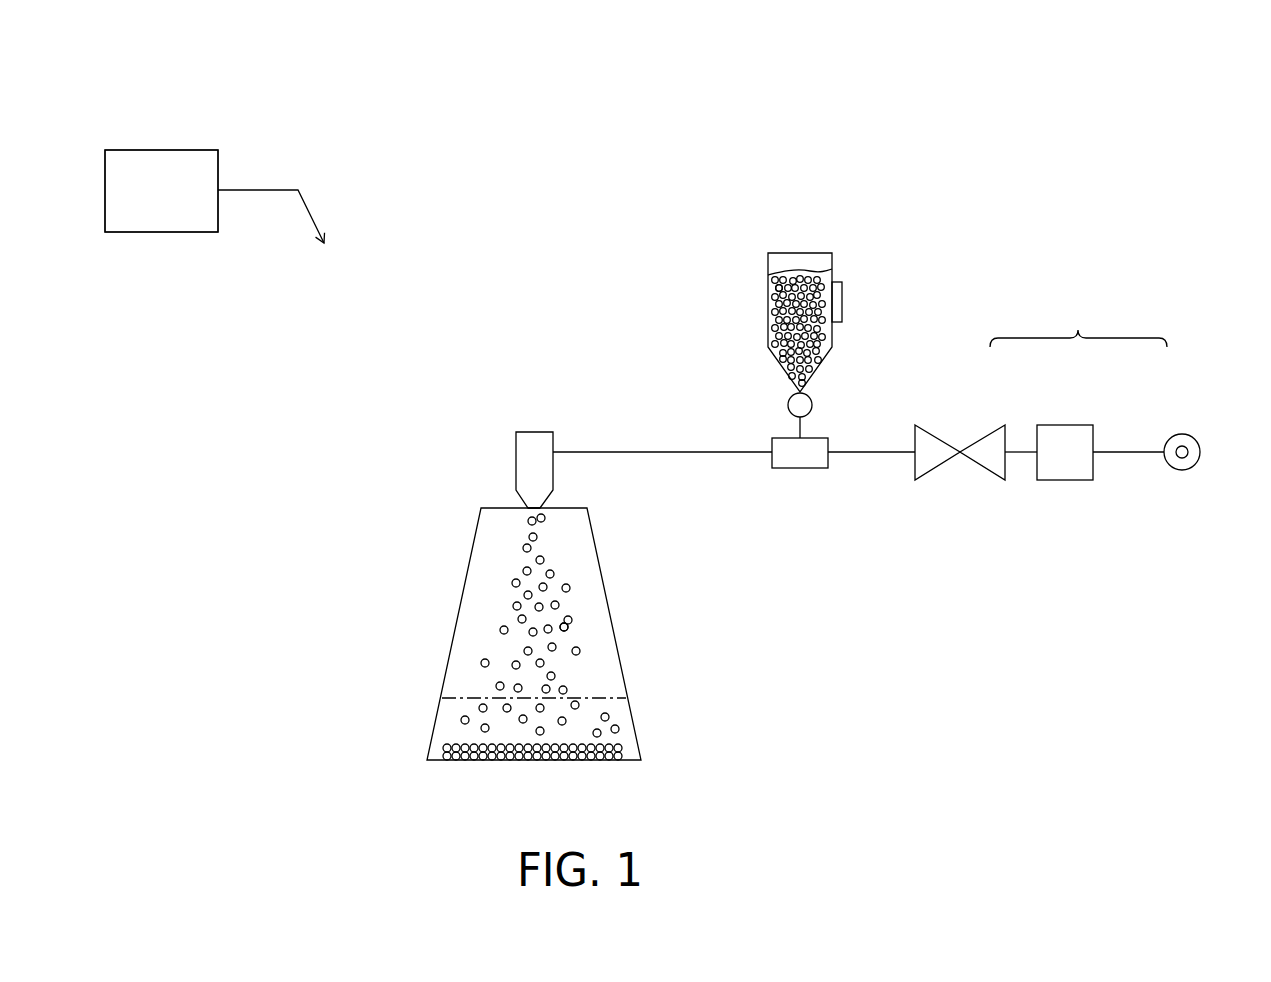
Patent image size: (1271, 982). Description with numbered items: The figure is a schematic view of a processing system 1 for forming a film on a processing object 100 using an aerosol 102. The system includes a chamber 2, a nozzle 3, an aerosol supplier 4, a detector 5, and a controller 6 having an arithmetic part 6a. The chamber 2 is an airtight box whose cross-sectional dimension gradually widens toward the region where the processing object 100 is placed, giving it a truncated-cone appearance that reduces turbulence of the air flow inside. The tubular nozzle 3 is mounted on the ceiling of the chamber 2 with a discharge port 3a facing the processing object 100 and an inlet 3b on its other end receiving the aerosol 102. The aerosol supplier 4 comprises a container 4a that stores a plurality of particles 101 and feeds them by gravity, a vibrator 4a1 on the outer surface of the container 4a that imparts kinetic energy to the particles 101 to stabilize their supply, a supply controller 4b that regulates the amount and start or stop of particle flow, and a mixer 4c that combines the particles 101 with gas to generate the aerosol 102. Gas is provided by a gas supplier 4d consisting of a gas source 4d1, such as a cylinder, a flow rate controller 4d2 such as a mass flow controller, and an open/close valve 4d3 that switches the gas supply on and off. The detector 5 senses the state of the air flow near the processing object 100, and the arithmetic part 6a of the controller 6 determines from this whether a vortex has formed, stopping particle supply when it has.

The processing system 1 is at (1042, 94).
The chamber 2 is at (500, 545).
The nozzle 3 is at (516, 462).
The discharge port 3a is at (546, 518).
The inlet 3b is at (556, 443).
The aerosol supplier 4 is at (960, 503).
The container 4a is at (832, 268).
The vibrator 4a1 is at (842, 302).
The supply controller 4b is at (813, 407).
The mixer 4c is at (800, 468).
The gas supplier 4d is at (1078, 323).
The gas source 4d1 is at (1180, 434).
The flow rate controller 4d2 is at (1063, 425).
The open/close valve 4d3 is at (990, 425).
The detector 5 is at (478, 698).
The controller 6 is at (162, 150).
The arithmetic part 6a is at (161, 191).
The processing object 100 is at (614, 760).
The particles 101 is at (770, 292).
The aerosol 102 is at (480, 642).